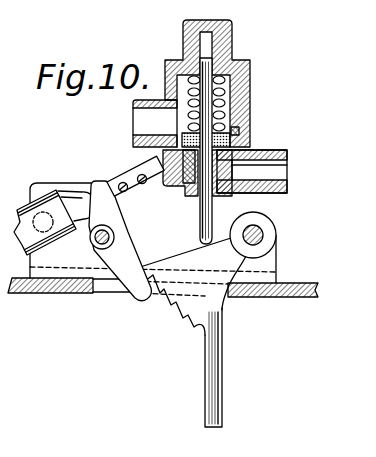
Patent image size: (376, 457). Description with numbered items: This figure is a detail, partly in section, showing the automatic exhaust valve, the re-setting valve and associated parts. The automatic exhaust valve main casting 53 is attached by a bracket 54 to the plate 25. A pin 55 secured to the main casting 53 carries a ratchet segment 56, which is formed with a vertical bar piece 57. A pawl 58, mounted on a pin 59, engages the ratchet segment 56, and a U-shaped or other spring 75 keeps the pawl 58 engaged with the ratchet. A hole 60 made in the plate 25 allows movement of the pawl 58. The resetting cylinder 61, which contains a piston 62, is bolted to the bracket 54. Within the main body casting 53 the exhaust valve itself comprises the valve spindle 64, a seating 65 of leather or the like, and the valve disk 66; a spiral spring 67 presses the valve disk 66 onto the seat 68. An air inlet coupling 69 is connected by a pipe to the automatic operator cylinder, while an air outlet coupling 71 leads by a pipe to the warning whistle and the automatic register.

The plate 25 is at (289, 284).
The automatic exhaust valve main casting 53 is at (251, 86).
The bracket 54 is at (33, 184).
The pin 55 is at (263, 237).
The ratchet segment 56 is at (180, 317).
The vertical bar piece 57 is at (222, 372).
The pawl 58 is at (118, 246).
The pin 59 is at (93, 252).
The hole 60 is at (117, 288).
The resetting cylinder 61 is at (18, 211).
The piston 62 is at (72, 203).
The valve spindle 64 is at (211, 219).
The seating 65 is at (232, 143).
The valve disk 66 is at (239, 131).
The spiral spring 67 is at (222, 113).
The seat 68 is at (163, 152).
The air inlet coupling 69 is at (136, 122).
The air outlet coupling 71 is at (278, 171).
The spring 75 is at (120, 175).